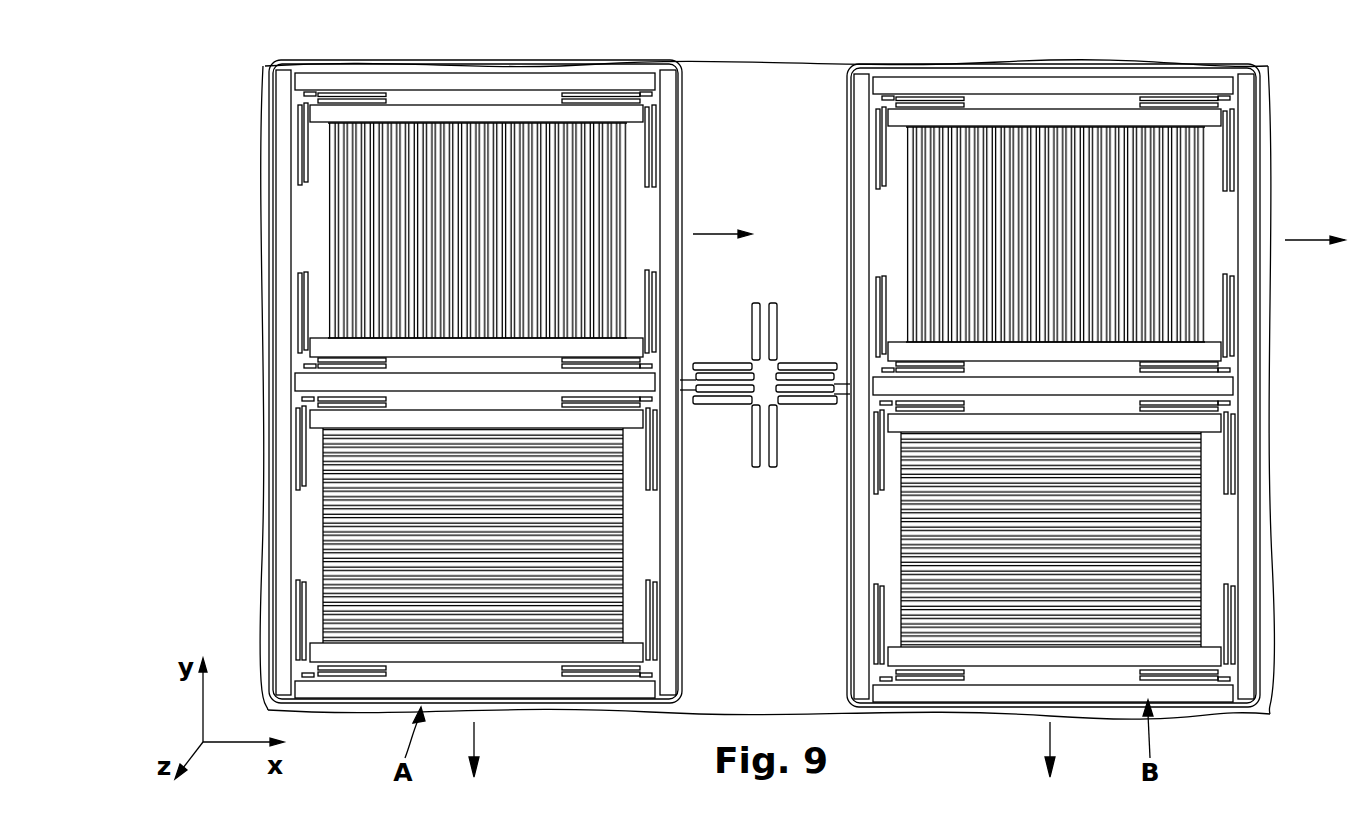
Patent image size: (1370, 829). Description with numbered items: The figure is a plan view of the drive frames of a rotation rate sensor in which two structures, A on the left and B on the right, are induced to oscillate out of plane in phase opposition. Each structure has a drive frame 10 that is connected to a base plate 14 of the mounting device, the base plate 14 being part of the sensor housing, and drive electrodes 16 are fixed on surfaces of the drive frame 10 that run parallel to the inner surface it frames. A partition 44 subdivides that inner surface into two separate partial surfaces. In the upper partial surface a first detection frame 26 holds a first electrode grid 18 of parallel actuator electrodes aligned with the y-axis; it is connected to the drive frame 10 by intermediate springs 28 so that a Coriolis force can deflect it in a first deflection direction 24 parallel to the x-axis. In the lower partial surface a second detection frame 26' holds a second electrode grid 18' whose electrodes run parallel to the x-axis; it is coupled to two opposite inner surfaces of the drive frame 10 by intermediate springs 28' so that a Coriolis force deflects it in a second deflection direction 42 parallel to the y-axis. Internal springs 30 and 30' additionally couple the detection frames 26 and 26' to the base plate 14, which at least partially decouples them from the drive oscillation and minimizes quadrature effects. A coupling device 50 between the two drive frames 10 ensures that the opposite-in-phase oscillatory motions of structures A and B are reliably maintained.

The drive frame 10 is at (1043, 78).
The base plate 14 is at (762, 100).
The drive electrode 16 is at (480, 82).
The first electrode grid 18 is at (766, 181).
The second electrode grid 18' is at (762, 591).
The first deflection direction 24 is at (1019, 211).
The first detection frame 26 is at (812, 190).
The second detection frame 26' is at (765, 582).
The intermediate spring 28 is at (767, 196).
The intermediate spring 28' is at (764, 539).
The internal spring 30 is at (764, 428).
The internal spring 30' is at (765, 580).
The second deflection direction 42 is at (476, 740).
The partition 44 is at (680, 345).
The coupling device 50 is at (790, 492).